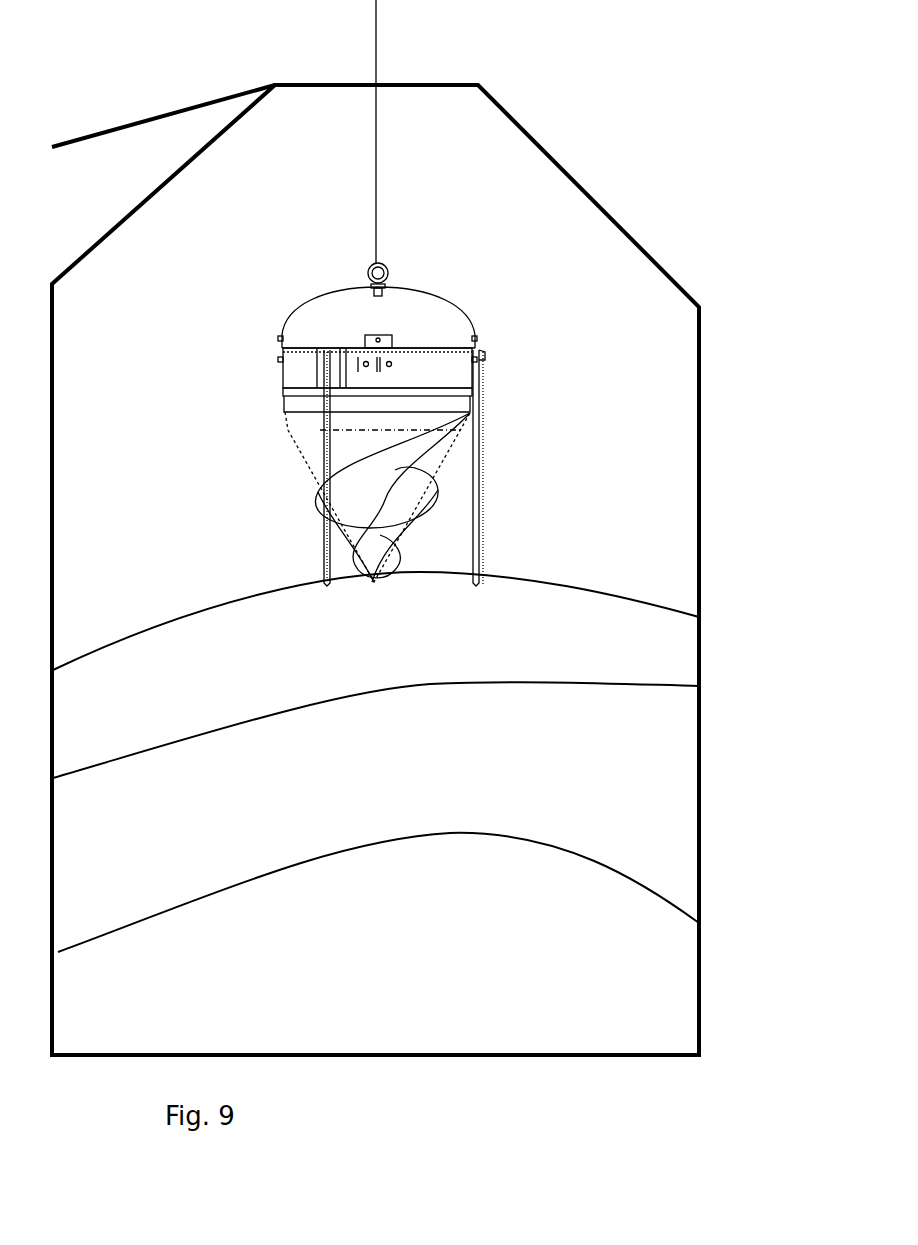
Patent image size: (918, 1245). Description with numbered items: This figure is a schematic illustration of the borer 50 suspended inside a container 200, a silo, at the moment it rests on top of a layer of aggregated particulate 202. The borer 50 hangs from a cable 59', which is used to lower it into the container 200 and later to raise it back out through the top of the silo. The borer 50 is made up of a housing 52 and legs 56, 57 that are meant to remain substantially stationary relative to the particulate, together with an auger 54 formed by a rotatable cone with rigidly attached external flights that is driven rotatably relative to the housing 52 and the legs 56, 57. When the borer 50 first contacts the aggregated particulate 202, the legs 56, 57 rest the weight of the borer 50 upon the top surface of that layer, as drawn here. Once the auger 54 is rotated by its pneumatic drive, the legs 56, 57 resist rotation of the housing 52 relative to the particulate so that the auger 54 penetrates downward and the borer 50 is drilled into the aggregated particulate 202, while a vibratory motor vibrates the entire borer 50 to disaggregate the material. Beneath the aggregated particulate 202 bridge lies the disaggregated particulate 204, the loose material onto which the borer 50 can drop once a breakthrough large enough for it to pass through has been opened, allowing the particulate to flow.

The container 200 is at (699, 515).
The aggregated particulate 202 is at (664, 662).
The disaggregated particulate 204 is at (548, 987).
The cable 59' is at (421, 131).
The borer 50 is at (468, 292).
The housing 52 is at (299, 332).
The auger 54 is at (414, 533).
The leg 56 is at (327, 532).
The leg 57 is at (478, 548).